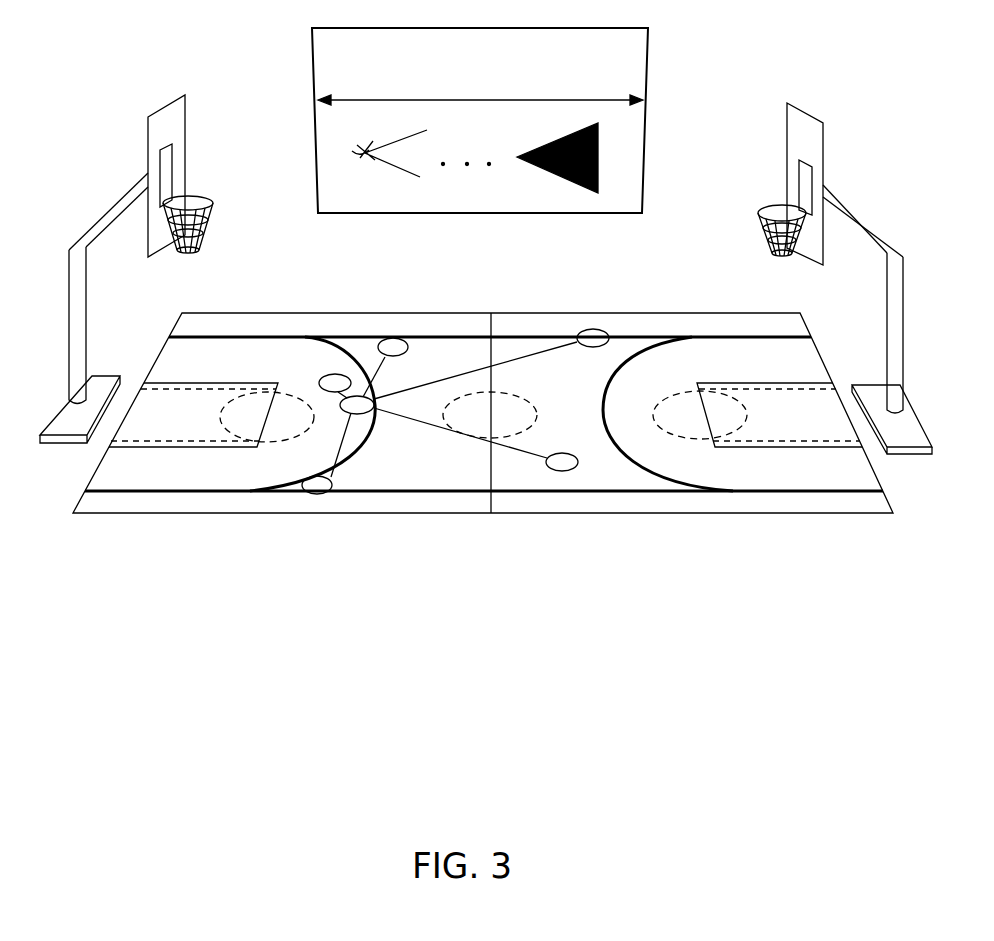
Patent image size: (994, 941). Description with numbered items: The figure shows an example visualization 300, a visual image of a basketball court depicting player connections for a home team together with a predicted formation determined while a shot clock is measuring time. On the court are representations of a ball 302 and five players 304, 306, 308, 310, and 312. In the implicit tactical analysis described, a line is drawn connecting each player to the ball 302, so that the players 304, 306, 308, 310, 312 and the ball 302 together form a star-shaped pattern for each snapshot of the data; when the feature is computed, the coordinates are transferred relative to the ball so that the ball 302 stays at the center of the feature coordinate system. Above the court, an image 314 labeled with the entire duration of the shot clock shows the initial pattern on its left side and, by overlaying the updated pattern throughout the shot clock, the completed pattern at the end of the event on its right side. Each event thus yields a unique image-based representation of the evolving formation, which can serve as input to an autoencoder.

The visualization 300 is at (300, 648).
The ball 302 is at (372, 397).
The player 304 is at (336, 374).
The player 306 is at (396, 338).
The player 308 is at (315, 494).
The player 310 is at (611, 338).
The player 312 is at (557, 472).
The image 314 is at (316, 145).